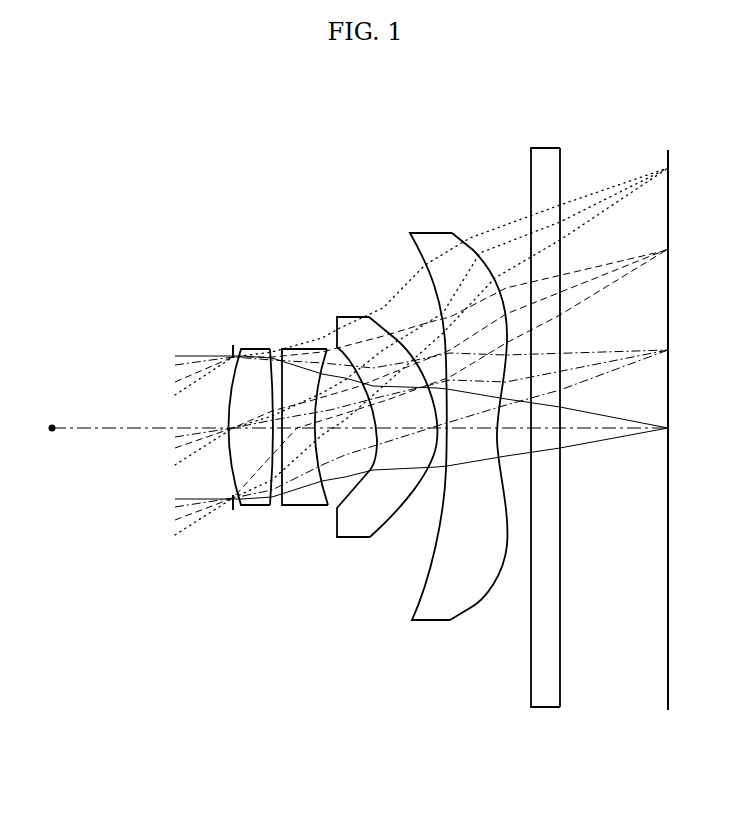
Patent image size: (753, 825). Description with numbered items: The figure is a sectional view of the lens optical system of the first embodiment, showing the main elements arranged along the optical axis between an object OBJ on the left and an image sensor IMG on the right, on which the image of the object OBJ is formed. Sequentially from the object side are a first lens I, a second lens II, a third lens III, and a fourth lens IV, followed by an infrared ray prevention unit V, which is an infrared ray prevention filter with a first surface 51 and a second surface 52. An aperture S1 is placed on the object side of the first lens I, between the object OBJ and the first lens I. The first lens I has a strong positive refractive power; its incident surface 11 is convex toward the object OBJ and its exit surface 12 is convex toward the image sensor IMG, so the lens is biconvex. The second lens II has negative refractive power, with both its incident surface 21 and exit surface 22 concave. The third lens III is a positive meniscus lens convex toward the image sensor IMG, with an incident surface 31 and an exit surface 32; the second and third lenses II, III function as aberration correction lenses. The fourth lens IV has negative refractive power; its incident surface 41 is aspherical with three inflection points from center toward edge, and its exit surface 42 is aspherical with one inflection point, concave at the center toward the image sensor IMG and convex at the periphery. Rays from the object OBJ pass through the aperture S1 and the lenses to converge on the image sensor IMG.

The incident surface of the first lens 11 is at (242, 348).
The exit surface of the first lens 12 is at (269, 348).
The incident surface of the second lens 21 is at (291, 348).
The exit surface of the second lens 22 is at (322, 348).
The incident surface of the third lens 31 is at (345, 346).
The exit surface of the third lens 32 is at (378, 323).
The incident surface of the fourth lens 41 is at (432, 259).
The exit surface of the fourth lens 42 is at (463, 249).
The first surface of the infrared ray prevention unit 51 is at (531, 160).
The second surface of the infrared ray prevention unit 52 is at (562, 160).
The aperture S1 is at (232, 347).
The object OBJ is at (52, 421).
The image sensor IMG is at (667, 151).
The first lens I is at (255, 434).
The second lens II is at (303, 429).
The third lens III is at (387, 434).
The fourth lens IV is at (458, 439).
The infrared ray prevention unit V is at (542, 444).